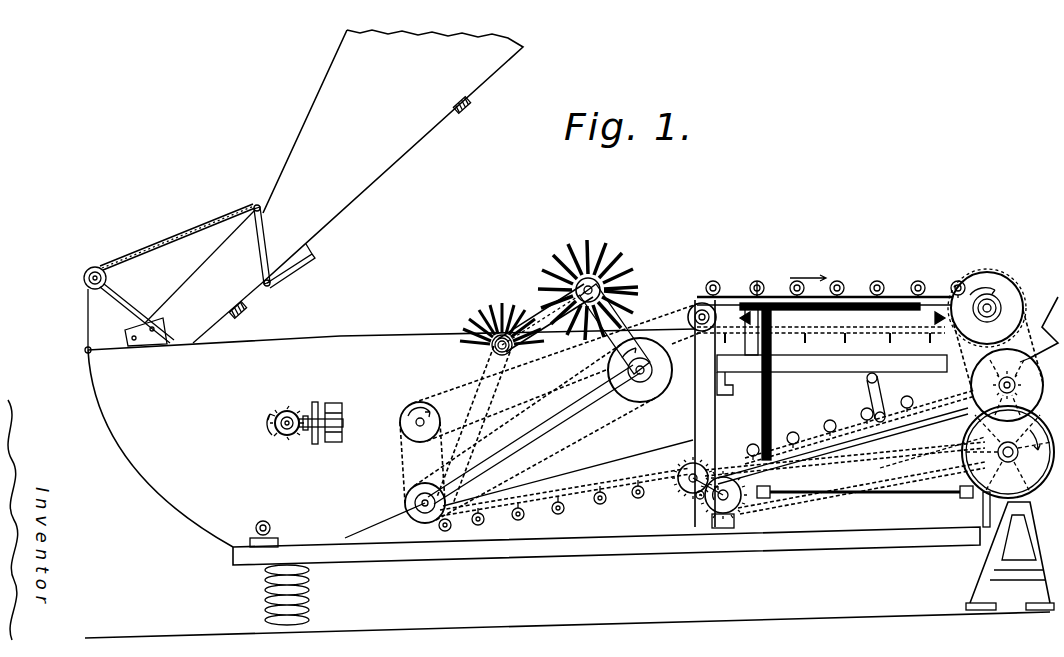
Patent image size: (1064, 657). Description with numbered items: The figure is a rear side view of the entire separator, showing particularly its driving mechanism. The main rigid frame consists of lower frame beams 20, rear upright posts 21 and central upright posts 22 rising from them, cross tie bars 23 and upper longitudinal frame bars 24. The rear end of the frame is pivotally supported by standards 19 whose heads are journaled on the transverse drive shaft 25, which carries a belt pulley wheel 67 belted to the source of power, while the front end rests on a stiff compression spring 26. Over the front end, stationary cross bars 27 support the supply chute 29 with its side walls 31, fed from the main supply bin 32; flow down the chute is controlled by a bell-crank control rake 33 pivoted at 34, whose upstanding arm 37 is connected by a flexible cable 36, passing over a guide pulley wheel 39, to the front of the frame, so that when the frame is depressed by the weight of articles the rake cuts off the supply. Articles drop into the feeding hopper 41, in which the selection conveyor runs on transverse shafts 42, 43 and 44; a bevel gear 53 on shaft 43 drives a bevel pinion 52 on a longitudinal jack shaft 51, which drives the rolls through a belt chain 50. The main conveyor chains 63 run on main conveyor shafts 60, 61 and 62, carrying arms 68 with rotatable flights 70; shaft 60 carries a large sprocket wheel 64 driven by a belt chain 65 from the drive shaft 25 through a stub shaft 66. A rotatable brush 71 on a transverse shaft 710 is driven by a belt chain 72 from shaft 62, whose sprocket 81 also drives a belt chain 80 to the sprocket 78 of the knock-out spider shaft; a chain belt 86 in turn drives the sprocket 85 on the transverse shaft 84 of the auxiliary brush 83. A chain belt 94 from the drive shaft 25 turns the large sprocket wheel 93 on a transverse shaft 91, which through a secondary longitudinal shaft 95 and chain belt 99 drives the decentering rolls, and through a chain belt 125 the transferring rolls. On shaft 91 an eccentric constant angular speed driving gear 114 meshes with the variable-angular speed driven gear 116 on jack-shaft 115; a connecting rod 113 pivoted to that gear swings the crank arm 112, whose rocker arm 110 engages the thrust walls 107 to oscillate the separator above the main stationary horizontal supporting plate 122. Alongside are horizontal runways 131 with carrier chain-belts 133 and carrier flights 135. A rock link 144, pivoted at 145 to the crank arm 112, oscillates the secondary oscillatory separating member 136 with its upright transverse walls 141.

The standards 19 is at (997, 572).
The lower frame beams 20 is at (593, 546).
The rear upright posts 21 is at (984, 530).
The central upright posts 22 is at (705, 413).
The cross tie bars 23 is at (722, 396).
The upper longitudinal frame bars 24 is at (832, 338).
The transverse drive shaft 25 is at (998, 452).
The compression spring 26 is at (307, 604).
The stationary cross bars 27 is at (471, 106).
The supply chute 29 is at (193, 314).
The side walls 31 is at (177, 263).
The main supply bin 32 is at (392, 156).
The bell-crank control rake 33 is at (290, 272).
The pivot 34 is at (267, 289).
The flexible cable 36 is at (86, 310).
The upstanding arm 37 is at (263, 236).
The guide pulley wheel 39 is at (95, 266).
The feeding hopper 41 is at (391, 438).
The transverse shaft 42 is at (401, 428).
The transverse shaft 43 is at (286, 410).
The transverse shaft 44 is at (271, 525).
The belt chain 50 is at (313, 404).
The longitudinal jack shaft 51 is at (344, 422).
The bevel pinion 52 is at (306, 431).
The bevel gear 53 is at (276, 438).
The main conveyor shaft 60 is at (993, 308).
The main conveyor shaft 61 is at (702, 302).
The main conveyor shaft 62 is at (430, 521).
The main conveyor chains 63 is at (621, 493).
The large sprocket wheel 64 is at (970, 274).
The belt chain 65 is at (1000, 275).
The intermediate jack or stub shaft 66 is at (1036, 398).
The belt pulley wheel 67 is at (1030, 497).
The arms 68 is at (600, 490).
The rotatable flights 70 is at (566, 512).
The rotatable brush 71 is at (497, 312).
The transverse shaft 710 is at (492, 347).
The belt chain 72 is at (503, 383).
The sprocket 78 is at (640, 370).
The belt chain 80 is at (587, 436).
The sprocket 81 is at (405, 502).
The auxiliary brush 83 is at (590, 250).
The transverse shaft 84 is at (603, 285).
The sprocket 85 is at (615, 329).
The chain belt 86 is at (540, 312).
The transverse shaft 91 is at (730, 512).
The large sprocket wheel 93 is at (749, 506).
The chain belt 94 is at (772, 475).
The secondary longitudinal shaft 95 is at (940, 495).
The chain belt 99 is at (771, 399).
The thrust walls 107 is at (856, 309).
The rocker arm 110 is at (850, 334).
The crank arm 112 is at (881, 400).
The connecting rod 113 is at (830, 438).
The constant angular speed driving gear 114 is at (714, 530).
The jack-shaft 115 is at (683, 485).
The variable-angular speed driven gear 116 is at (698, 500).
The main stationary horizontal supporting plate 122 is at (820, 300).
The chain belt 125 is at (960, 424).
The horizontal runways 131 is at (903, 302).
The carrier chain-belts 133 is at (860, 337).
The carrier flights 135 is at (757, 288).
The secondary oscillatory separating member 136 is at (1041, 357).
The upright transverse walls 141 is at (1046, 324).
The rock link 144 is at (930, 400).
The pivot 145 is at (884, 421).